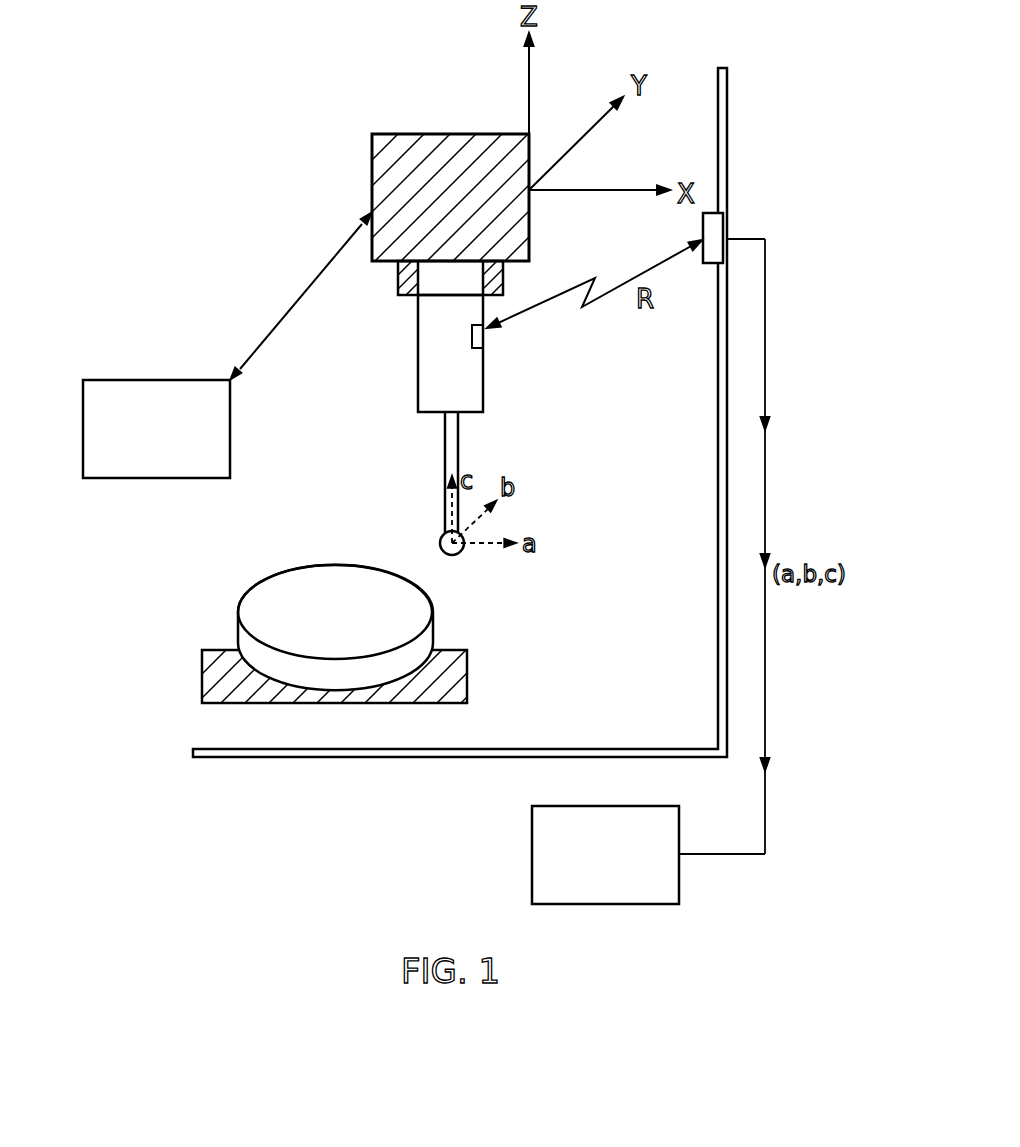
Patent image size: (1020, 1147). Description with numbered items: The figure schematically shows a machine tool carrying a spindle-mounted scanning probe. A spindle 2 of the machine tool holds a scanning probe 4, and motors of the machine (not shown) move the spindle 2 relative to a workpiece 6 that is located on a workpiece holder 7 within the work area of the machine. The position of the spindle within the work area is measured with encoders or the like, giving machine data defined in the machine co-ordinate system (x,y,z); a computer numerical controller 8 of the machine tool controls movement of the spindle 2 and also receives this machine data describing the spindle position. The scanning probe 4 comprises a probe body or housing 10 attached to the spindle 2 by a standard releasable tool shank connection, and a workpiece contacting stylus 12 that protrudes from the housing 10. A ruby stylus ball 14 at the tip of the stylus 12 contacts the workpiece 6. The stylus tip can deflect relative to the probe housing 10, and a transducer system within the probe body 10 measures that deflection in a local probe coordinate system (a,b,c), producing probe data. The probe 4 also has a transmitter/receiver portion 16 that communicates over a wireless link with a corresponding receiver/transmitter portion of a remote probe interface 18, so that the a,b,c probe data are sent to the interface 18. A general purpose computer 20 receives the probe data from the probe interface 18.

The spindle 2 is at (427, 134).
The scanning probe 4 is at (413, 353).
The workpiece 6 is at (344, 631).
The workpiece holder 7 is at (467, 675).
The computer numerical controller 8 is at (164, 447).
The probe body or housing 10 is at (466, 391).
The stylus 12 is at (449, 441).
The ruby stylus ball 14 is at (458, 553).
The transmitter/receiver portion 16 is at (483, 340).
The probe interface 18 is at (718, 228).
The general purpose computer 20 is at (620, 873).